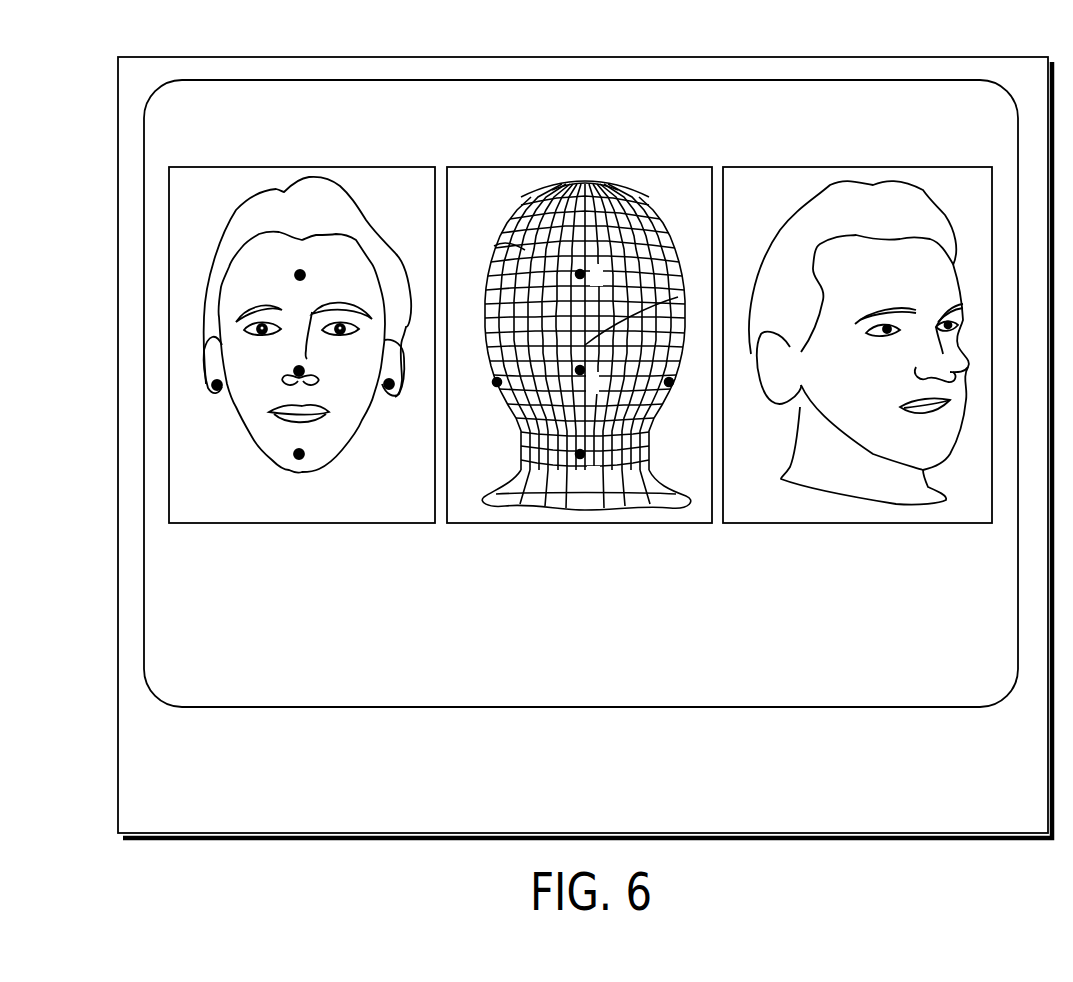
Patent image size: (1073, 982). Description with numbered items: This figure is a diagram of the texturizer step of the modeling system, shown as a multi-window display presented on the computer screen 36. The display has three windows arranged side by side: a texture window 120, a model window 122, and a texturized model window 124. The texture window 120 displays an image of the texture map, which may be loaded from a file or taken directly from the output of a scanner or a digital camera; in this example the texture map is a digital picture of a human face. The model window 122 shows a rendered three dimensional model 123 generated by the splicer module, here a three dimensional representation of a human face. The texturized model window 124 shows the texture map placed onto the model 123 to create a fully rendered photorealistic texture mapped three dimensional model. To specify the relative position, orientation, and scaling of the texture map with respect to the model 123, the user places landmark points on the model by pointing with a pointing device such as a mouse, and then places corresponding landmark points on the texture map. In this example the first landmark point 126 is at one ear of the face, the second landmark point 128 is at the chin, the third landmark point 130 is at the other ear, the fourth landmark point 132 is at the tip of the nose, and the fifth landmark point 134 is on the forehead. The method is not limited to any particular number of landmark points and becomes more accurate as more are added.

The computer screen 36 is at (937, 842).
The texture window 120 is at (305, 563).
The model window 122 is at (580, 563).
The three dimensional model 123 is at (562, 190).
The texturized model window 124 is at (877, 563).
The first landmark point 126 is at (487, 371).
The second landmark point 128 is at (522, 459).
The third landmark point 130 is at (669, 400).
The fourth landmark point 132 is at (678, 297).
The fifth landmark point 134 is at (494, 246).